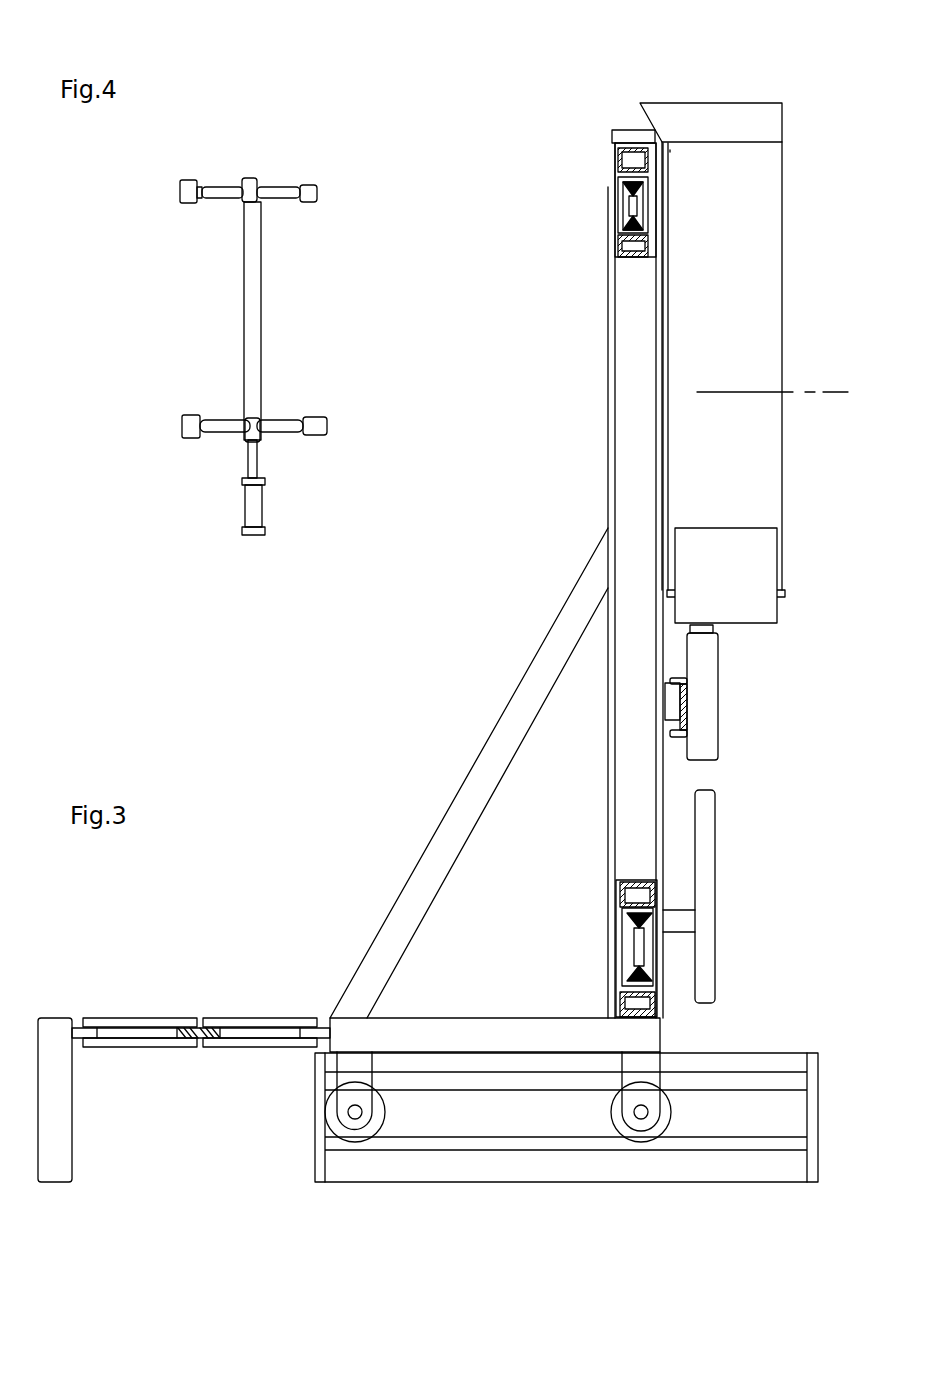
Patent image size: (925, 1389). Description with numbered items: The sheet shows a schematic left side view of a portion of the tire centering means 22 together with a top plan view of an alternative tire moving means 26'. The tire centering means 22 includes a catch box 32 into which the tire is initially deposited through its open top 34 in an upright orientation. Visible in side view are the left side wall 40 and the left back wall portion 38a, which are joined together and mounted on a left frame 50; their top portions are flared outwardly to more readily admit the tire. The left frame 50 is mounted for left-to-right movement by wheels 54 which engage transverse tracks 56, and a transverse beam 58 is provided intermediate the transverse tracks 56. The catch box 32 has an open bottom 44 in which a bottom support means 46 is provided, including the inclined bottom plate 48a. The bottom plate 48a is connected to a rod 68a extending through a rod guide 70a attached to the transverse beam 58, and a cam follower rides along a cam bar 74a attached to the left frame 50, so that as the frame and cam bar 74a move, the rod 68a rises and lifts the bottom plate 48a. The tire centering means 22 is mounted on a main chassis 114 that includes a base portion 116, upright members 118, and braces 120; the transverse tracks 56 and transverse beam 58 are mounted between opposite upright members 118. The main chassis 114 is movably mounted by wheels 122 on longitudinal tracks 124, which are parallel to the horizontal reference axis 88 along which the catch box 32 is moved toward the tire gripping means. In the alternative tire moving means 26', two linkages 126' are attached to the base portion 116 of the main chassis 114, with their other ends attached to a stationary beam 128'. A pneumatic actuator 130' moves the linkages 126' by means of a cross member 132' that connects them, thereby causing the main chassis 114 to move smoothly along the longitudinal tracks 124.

In FIG. 3, the tire centering means 22 is at (703, 50).
In FIG. 3, the catch box 32 is at (783, 248).
In FIG. 3, the open top 34 is at (736, 122).
In FIG. 3, the left side wall 40 is at (729, 286).
In FIG. 3, the left back wall portion 38a is at (669, 325).
In FIG. 3, the horizontal reference axis 88 is at (833, 391).
In FIG. 3, the upright member 118 is at (614, 129).
In FIG. 3, the left frame 50 is at (607, 420).
In FIG. 3, the transverse tracks 56 is at (617, 162).
In FIG. 3, the wheels 54 is at (618, 210).
In FIG. 3, the bottom support means 46 is at (785, 597).
In FIG. 3, the bottom plate 48a is at (745, 583).
In FIG. 3, the open bottom 44 is at (766, 692).
In FIG. 3, the rod 68a is at (713, 628).
In FIG. 3, the rod guide 70a is at (720, 740).
In FIG. 3, the transverse beam 58 is at (677, 685).
In FIG. 3, the cam bar 74a is at (716, 935).
In FIG. 3, the main chassis 114 is at (495, 790).
In FIG. 3, the braces 120 is at (518, 690).
In FIG. 3, the base portion 116 is at (450, 1018).
In FIG. 4, the base portion 116 is at (312, 203).
In FIG. 3, the longitudinal tracks 124 is at (782, 1055).
In FIG. 3, the wheels 122 is at (328, 1130).
In FIG. 3, the tire moving means 26' is at (184, 1039).
In FIG. 4, the tire moving means 26' is at (242, 328).
In FIG. 3, the linkages 126' is at (200, 1004).
In FIG. 4, the linkages 126' is at (270, 282).
In FIG. 3, the stationary beam 128' is at (89, 1100).
In FIG. 4, the stationary beam 128' is at (155, 295).
In FIG. 3, the cross member 132' is at (201, 1076).
In FIG. 4, the cross member 132' is at (293, 340).
In FIG. 4, the pneumatic actuator 130' is at (297, 506).